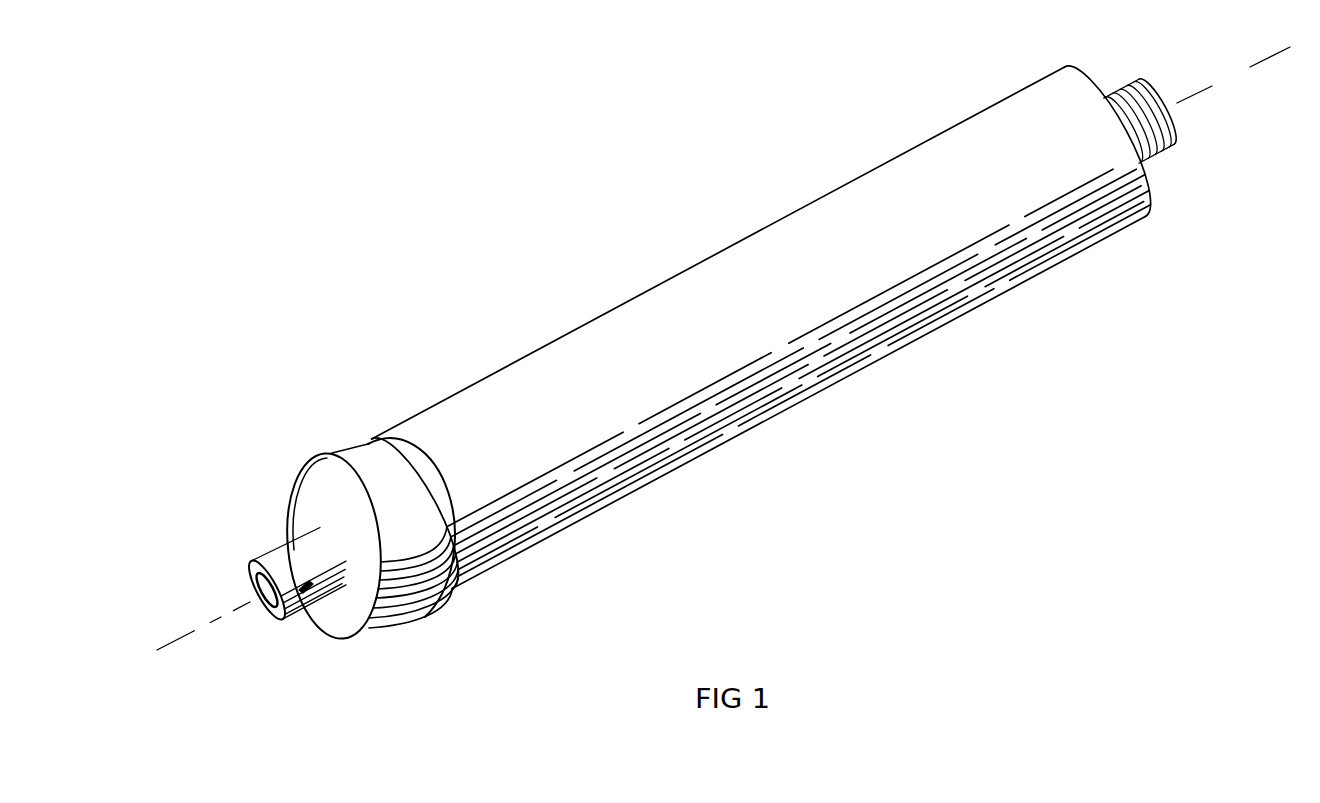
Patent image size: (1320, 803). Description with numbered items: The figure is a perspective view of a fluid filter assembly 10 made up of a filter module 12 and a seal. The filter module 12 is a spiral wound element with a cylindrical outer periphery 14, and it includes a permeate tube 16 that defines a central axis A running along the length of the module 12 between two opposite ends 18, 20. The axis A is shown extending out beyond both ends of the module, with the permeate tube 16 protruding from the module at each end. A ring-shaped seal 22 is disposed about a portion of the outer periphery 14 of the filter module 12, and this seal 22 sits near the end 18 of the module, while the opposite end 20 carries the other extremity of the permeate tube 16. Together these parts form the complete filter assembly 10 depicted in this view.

The fluid filter assembly 10 is at (492, 199).
The filter module 12 is at (708, 259).
The cylindrical outer periphery 14 is at (818, 225).
The permeate tube 16 is at (1170, 143).
The end 18 is at (350, 632).
The end 20 is at (1083, 70).
The ring-shaped seal 22 is at (380, 467).
The central axis A is at (1232, 75).